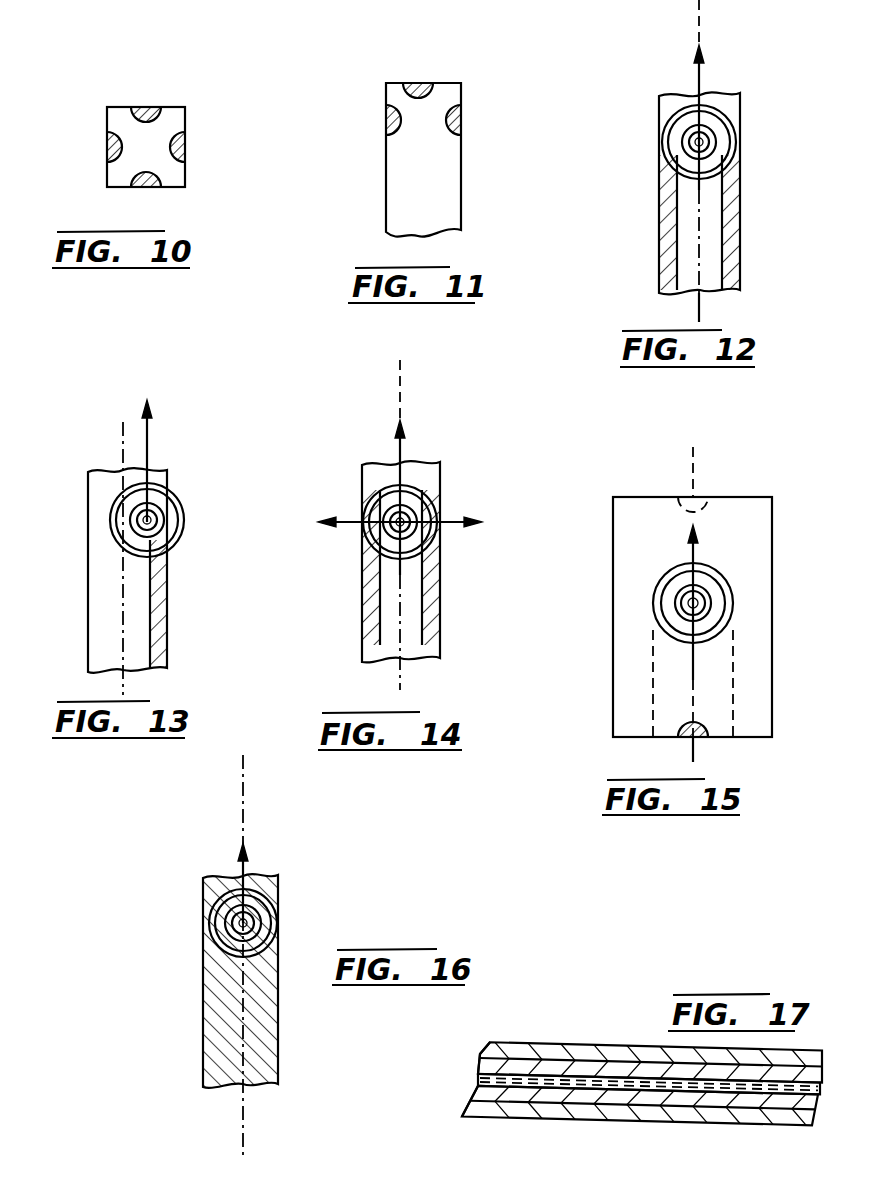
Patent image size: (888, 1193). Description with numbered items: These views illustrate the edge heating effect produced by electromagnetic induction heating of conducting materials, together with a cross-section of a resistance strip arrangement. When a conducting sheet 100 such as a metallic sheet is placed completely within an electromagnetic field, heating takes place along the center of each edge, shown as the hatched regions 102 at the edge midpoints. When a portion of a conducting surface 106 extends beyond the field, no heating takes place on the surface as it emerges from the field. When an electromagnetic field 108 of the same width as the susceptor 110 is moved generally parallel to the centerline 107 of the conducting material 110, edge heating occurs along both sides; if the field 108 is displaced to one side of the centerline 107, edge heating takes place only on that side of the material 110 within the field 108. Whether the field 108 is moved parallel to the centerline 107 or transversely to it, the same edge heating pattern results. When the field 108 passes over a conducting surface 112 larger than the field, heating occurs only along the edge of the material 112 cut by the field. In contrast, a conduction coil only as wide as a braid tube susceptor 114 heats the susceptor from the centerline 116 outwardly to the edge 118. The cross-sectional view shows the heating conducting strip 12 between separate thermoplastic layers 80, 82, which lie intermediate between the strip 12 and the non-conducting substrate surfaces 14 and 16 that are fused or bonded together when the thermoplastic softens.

In FIG. 10, the conducting sheet 100 is at (170, 128).
In FIG. 10, the notch 102 is at (150, 106).
In FIG. 11, the conducting surface 106 is at (443, 194).
In FIG. 12, the centerline 107 is at (700, 10).
In FIG. 13, the centerline 107 is at (123, 435).
In FIG. 14, the centerline 107 is at (400, 378).
In FIG. 12, the electromagnetic field 108 is at (738, 120).
In FIG. 13, the electromagnetic field 108 is at (155, 530).
In FIG. 14, the electromagnetic field 108 is at (432, 493).
In FIG. 15, the electromagnetic field 108 is at (720, 593).
In FIG. 12, the susceptor 110 is at (713, 232).
In FIG. 13, the susceptor 110 is at (108, 585).
In FIG. 14, the susceptor 110 is at (410, 618).
In FIG. 15, the conducting surface 112 is at (760, 547).
In FIG. 16, the braid tube susceptor 114 is at (272, 891).
In FIG. 16, the centerline 116 is at (243, 790).
In FIG. 16, the edge 118 is at (279, 1028).
In FIG. 17, the thermoplastic layer 80 is at (480, 1053).
In FIG. 17, the thermoplastic layer 82 is at (475, 1078).
In FIG. 17, the surface 14 is at (818, 1050).
In FIG. 17, the conducting strip 12 is at (822, 1066).
In FIG. 17, the surface 16 is at (815, 1084).